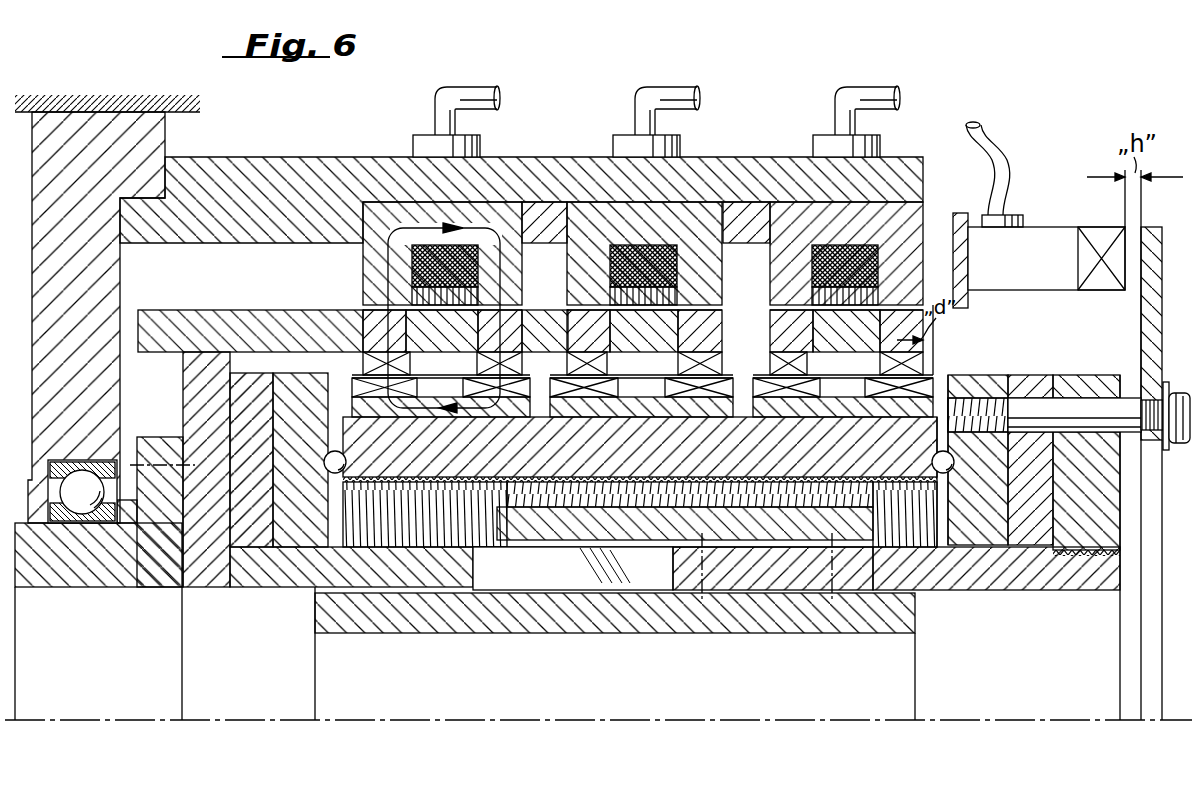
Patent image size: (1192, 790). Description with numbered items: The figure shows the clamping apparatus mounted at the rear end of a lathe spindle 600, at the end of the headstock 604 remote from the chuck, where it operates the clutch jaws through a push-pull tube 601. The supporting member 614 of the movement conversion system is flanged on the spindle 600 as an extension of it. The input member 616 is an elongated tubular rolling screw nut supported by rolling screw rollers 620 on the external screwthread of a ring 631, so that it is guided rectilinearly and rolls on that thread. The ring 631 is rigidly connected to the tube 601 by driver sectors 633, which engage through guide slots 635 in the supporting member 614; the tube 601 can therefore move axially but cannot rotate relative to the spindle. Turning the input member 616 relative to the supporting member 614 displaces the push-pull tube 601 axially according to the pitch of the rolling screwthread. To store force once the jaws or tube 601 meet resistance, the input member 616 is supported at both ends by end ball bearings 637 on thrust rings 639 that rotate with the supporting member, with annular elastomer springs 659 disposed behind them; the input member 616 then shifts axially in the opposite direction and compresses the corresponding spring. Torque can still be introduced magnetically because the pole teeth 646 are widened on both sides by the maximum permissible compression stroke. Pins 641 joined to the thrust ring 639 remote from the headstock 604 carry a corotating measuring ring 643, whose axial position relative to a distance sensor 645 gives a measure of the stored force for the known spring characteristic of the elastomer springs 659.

The lathe spindle 600 is at (122, 572).
The push-pull tube 601 is at (380, 620).
The headstock 604 is at (152, 132).
The supporting member 614 is at (260, 578).
The input member 616 is at (420, 468).
The rolling screw rollers 620 is at (515, 488).
The ring 631 is at (858, 524).
The driver sectors 633 is at (755, 580).
The guide slots 635 is at (543, 565).
The end ball bearings 637 is at (348, 455).
The thrust rings 639 is at (296, 530).
The pins 641 is at (1077, 405).
The measuring ring 643 is at (1143, 320).
The distance sensor 645 is at (995, 275).
The pole teeth 646 is at (470, 386).
The annular elastomer springs 659 is at (238, 530).